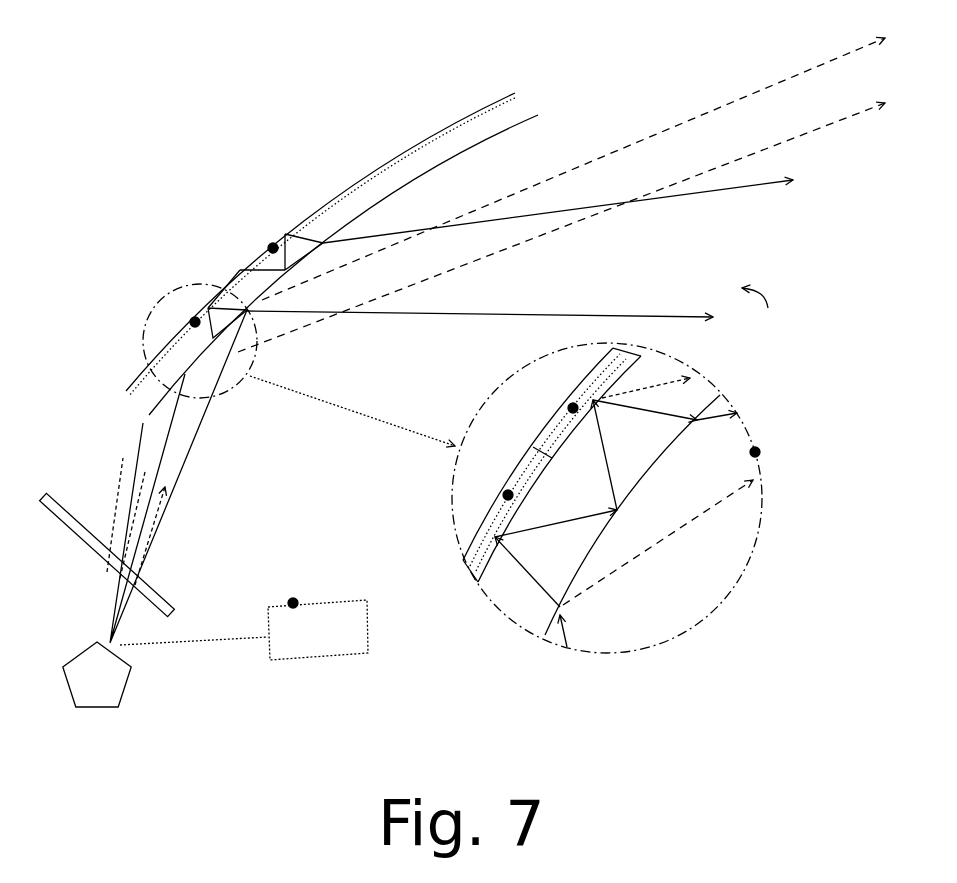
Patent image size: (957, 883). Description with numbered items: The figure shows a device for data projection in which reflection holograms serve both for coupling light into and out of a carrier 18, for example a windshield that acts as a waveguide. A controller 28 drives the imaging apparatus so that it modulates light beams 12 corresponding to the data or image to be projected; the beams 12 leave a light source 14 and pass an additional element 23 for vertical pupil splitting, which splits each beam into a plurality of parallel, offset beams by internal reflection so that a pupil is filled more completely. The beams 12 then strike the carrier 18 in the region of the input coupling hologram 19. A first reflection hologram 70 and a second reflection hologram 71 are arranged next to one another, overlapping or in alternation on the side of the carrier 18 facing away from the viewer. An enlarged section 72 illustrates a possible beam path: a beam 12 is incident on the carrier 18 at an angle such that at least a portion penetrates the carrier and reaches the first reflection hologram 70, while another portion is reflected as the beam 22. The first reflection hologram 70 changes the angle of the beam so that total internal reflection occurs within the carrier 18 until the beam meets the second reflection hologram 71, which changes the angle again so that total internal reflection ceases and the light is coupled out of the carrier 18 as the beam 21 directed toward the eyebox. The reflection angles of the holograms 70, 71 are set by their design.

The light beam 12 is at (201, 425).
The light source 14 is at (67, 684).
The carrier 18 is at (149, 415).
The input coupling hologram 19 is at (527, 447).
The coupled-out beam 21 is at (566, 310).
The reflected beam 22 is at (700, 113).
The element for vertical pupil splitting 23 is at (152, 586).
The controller 28 is at (296, 598).
The first reflection hologram 70 is at (197, 318).
The second reflection hologram 71 is at (274, 244).
The section 72 is at (758, 448).